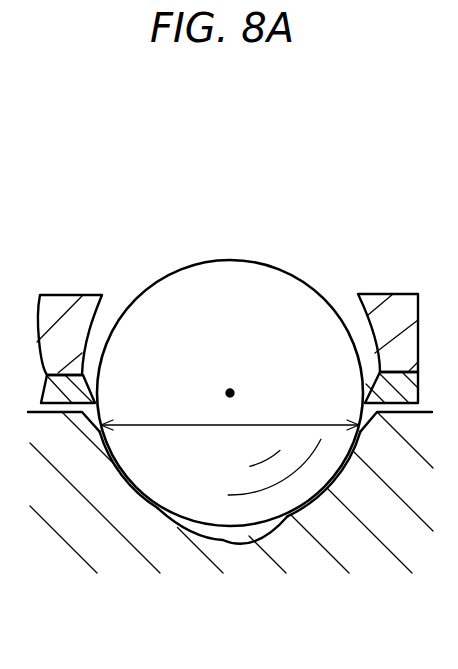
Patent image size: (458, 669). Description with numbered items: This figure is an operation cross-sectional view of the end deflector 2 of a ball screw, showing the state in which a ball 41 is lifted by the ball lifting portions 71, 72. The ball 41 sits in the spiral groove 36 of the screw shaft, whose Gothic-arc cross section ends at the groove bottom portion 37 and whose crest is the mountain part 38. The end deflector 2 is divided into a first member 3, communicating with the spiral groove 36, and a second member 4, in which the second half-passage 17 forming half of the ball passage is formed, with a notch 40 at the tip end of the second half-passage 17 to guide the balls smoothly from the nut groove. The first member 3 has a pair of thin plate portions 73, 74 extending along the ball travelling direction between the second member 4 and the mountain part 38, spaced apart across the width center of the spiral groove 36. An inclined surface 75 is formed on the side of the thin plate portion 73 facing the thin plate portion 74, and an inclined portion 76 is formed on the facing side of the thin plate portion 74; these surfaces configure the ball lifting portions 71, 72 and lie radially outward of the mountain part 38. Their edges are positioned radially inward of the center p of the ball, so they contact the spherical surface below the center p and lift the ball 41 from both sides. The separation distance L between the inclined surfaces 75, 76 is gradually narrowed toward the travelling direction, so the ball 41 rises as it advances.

The end deflector 2 is at (92, 200).
The first member 3 is at (63, 400).
The second member 4 is at (50, 308).
The second half-passage 17 is at (93, 320).
The spiral groove 36 is at (265, 514).
The groove bottom portion 37 is at (207, 500).
The mountain part 38 is at (418, 406).
The notch 40 is at (358, 294).
The ball 41 is at (203, 546).
The ball lifting portion 71 is at (158, 276).
The ball lifting portion 72 is at (350, 277).
The thin plate portion 73 is at (61, 414).
The thin plate portion 74 is at (423, 380).
The inclined surface 75 is at (84, 374).
The inclined portion 76 is at (368, 378).
The center of the ball p is at (232, 391).
The separation distance L is at (230, 415).